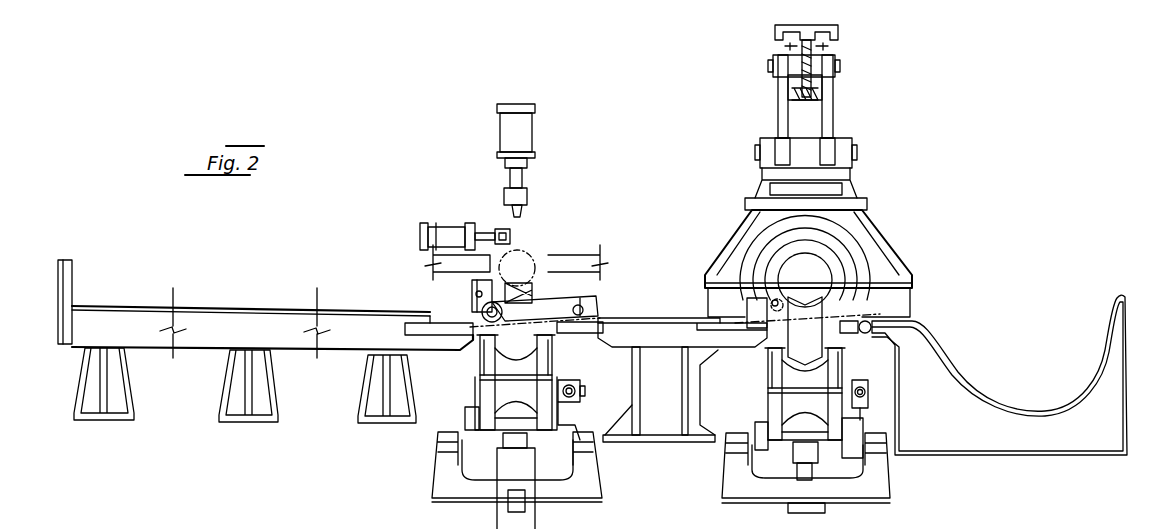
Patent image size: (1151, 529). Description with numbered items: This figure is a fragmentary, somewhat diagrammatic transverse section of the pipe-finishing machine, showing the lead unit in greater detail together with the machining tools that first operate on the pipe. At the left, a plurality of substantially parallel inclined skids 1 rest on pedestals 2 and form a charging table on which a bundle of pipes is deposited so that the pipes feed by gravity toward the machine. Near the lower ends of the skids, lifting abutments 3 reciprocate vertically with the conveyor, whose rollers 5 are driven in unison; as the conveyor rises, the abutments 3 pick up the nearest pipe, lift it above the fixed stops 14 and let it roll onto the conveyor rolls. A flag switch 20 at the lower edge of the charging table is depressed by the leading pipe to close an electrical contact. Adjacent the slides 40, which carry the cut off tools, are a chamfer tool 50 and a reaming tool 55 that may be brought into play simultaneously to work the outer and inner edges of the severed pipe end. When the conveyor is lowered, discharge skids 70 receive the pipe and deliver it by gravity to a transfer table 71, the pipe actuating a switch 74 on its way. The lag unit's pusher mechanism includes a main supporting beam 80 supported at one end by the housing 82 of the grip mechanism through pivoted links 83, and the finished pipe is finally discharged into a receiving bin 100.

The inclined skids 1 is at (208, 308).
The pedestals 2 is at (230, 367).
The lifting abutments 3 is at (499, 296).
The rollers 5 is at (512, 297).
The fixed stops 14 is at (472, 312).
The flag switch 20 is at (453, 317).
The slides 40 is at (566, 256).
The chamfer tool 50 is at (527, 197).
The reaming tool 55 is at (500, 228).
The discharge skids 70 is at (545, 303).
The transfer table 71 is at (642, 318).
The switch 74 is at (597, 300).
The main supporting beam 80 is at (800, 80).
The housing 82 is at (870, 241).
The pivoted links 83 is at (830, 110).
The receiving bin 100 is at (927, 340).